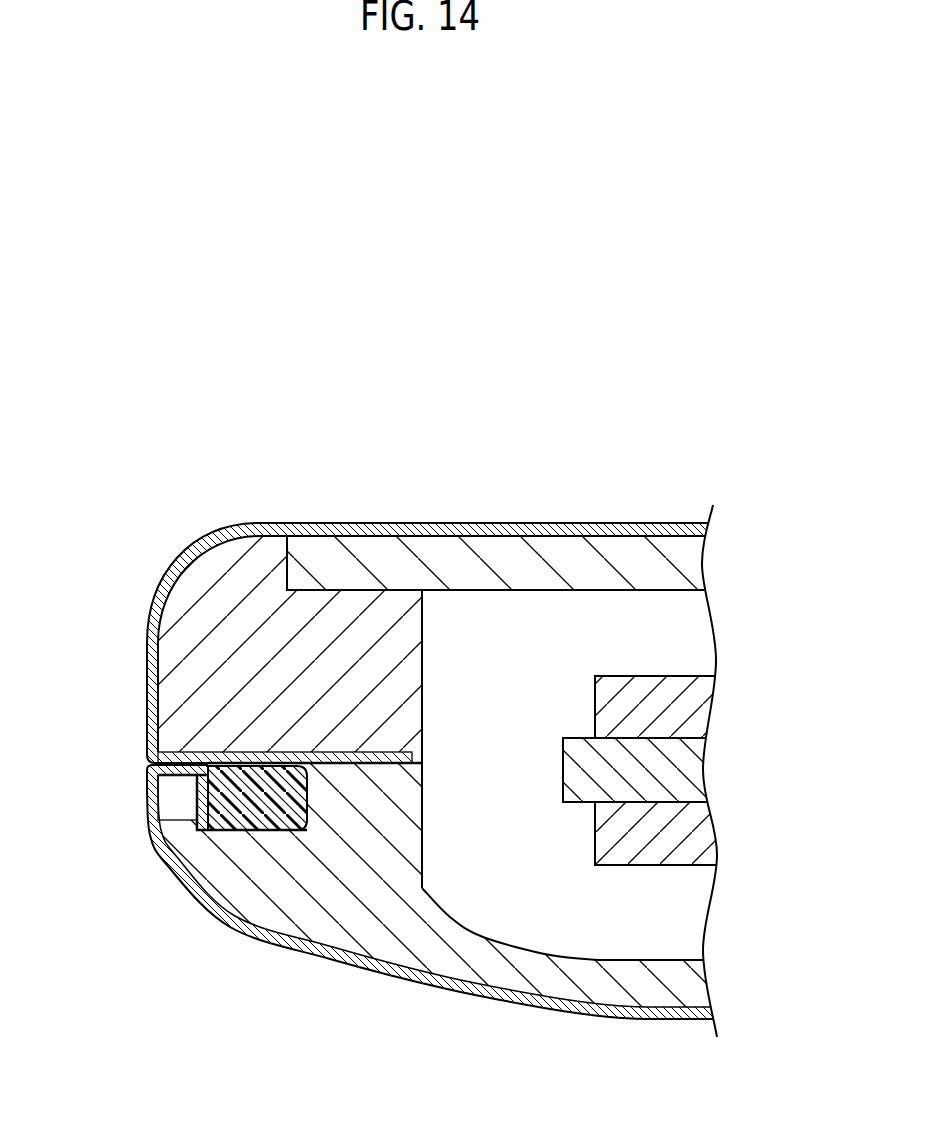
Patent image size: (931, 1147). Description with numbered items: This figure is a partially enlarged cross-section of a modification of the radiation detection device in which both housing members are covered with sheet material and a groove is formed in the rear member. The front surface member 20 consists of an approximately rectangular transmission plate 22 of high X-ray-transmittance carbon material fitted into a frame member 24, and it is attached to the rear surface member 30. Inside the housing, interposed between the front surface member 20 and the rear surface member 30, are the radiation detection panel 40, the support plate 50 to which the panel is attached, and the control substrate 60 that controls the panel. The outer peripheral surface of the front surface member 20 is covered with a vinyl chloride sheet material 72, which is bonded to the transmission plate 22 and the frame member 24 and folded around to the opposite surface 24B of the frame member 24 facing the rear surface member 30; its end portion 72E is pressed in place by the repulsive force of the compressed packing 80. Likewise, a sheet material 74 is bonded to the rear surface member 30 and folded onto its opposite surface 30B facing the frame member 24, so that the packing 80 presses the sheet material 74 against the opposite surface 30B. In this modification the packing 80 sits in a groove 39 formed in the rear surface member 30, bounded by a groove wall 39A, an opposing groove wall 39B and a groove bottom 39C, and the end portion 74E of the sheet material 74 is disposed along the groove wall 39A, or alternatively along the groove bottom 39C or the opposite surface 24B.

The front surface member 20 is at (387, 438).
The transmission plate 22 is at (372, 535).
The frame member 24 is at (265, 528).
The opposite surface 24B is at (418, 765).
The rear surface member 30 is at (648, 1007).
The opposite surface 30B is at (421, 700).
The groove 39 is at (413, 886).
The groove wall 39A is at (190, 838).
The second seal portion 39B is at (322, 815).
The groove bottom 39C is at (282, 832).
The radiation detection panel 40 is at (680, 676).
The support plate 50 is at (677, 803).
The control substrate 60 is at (678, 867).
The sheet material 72 is at (585, 525).
The end portion 72E is at (413, 757).
The sheet material 74 is at (498, 1008).
The end portion 74E is at (200, 833).
The packing 80 is at (244, 777).